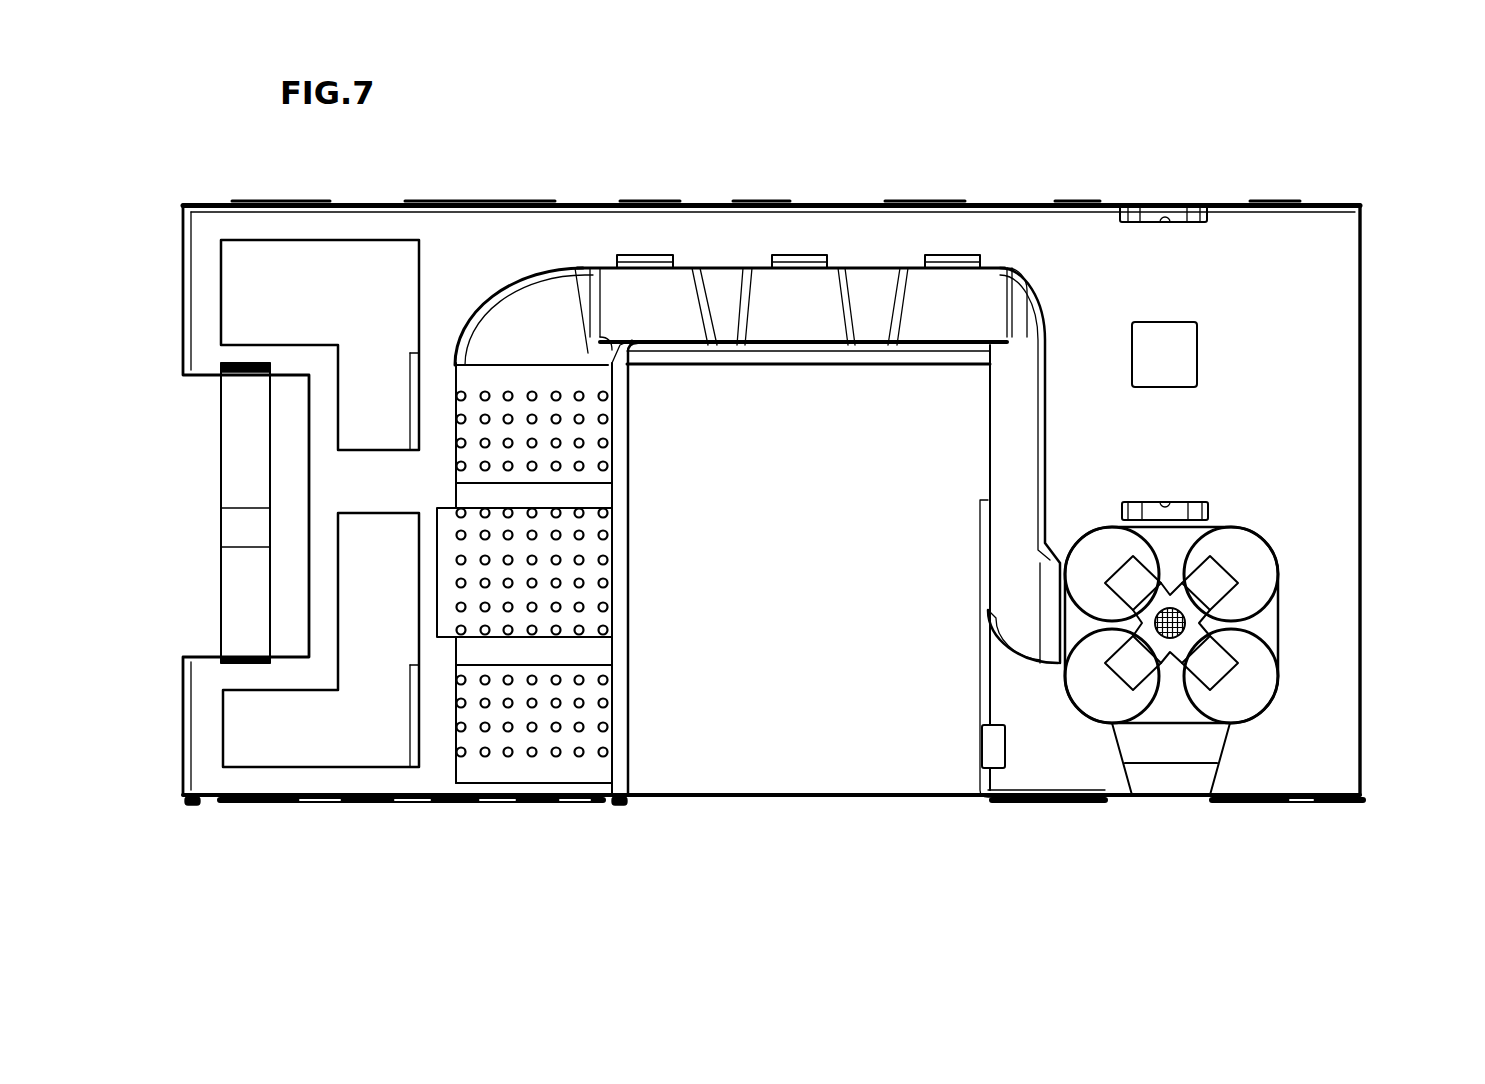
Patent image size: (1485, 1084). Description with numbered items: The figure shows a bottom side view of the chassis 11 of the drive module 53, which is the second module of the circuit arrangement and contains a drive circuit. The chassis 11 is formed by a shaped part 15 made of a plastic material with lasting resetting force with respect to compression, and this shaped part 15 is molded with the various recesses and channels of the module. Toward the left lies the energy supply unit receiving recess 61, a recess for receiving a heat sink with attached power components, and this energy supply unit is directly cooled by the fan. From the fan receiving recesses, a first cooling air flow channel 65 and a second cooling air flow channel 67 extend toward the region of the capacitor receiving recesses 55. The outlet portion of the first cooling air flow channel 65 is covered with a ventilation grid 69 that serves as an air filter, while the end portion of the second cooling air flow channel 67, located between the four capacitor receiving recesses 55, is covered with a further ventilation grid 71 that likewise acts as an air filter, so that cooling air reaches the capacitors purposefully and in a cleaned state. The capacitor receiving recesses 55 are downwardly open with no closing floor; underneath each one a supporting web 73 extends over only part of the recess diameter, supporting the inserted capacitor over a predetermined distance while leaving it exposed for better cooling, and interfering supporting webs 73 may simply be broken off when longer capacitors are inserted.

The drive module 53 is at (1302, 162).
The chassis 11 is at (1374, 378).
The shaped part 15 is at (1335, 315).
The first cooling air flow channel 65 is at (551, 354).
The second cooling air flow channel 67 is at (999, 466).
The energy supply unit receiving recess 61 is at (814, 689).
The ventilation grid 69 is at (597, 721).
The capacitor receiving recesses 55 is at (1262, 561).
The ventilation grid 71 is at (1190, 629).
The supporting web 73 is at (1220, 668).